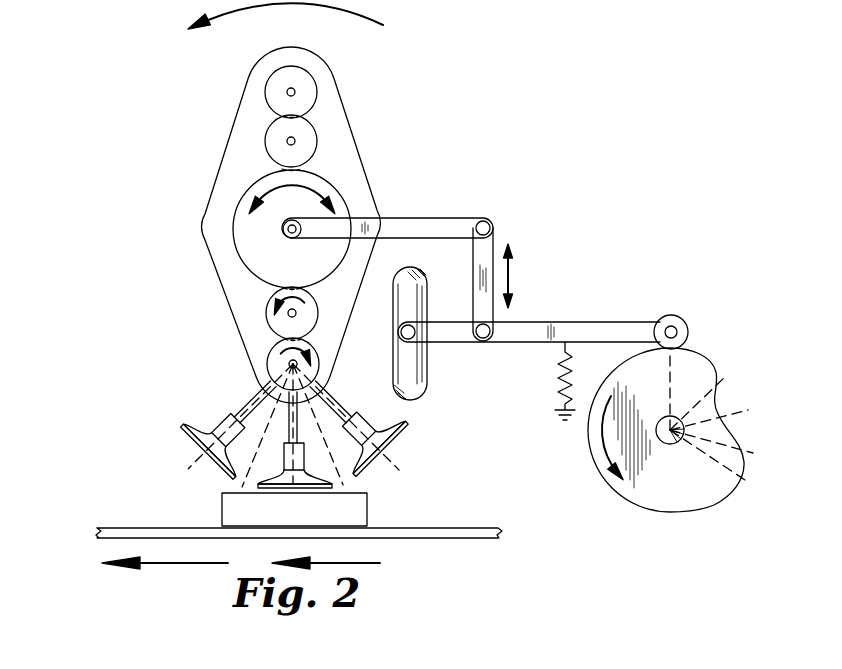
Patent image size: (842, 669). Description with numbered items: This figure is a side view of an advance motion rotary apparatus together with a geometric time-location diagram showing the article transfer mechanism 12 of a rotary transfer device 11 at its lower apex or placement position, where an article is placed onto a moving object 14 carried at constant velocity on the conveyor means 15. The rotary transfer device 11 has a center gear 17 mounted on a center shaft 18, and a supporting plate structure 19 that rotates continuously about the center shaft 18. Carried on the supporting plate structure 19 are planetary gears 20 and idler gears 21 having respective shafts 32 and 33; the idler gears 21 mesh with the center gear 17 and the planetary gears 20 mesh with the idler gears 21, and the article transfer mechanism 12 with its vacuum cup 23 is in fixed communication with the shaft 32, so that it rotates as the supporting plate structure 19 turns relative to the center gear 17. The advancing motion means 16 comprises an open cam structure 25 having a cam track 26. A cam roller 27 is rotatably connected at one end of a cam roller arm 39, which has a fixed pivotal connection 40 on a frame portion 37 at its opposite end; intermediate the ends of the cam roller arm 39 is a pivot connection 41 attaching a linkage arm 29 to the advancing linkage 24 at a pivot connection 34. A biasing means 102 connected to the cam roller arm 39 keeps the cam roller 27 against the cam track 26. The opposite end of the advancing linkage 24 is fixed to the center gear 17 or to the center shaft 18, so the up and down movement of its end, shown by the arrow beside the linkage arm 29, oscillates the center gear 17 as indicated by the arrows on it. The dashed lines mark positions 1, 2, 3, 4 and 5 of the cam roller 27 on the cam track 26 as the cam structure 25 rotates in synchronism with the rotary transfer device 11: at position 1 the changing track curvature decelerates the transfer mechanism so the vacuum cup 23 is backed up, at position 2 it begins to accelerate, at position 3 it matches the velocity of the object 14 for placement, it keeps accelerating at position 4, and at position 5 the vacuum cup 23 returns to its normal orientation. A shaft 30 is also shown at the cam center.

The position 1 is at (488, 416).
The position 2 is at (518, 430).
The position 3 is at (527, 441).
The position 4 is at (498, 441).
The position 5 is at (465, 432).
The rotary transfer device 11 is at (198, 190).
The article transfer mechanism 12 is at (246, 390).
The moving object 14 is at (360, 512).
The conveyor means 15 is at (478, 534).
The advancing motion means 16 is at (597, 294).
The center gear 17 is at (240, 243).
The center shaft 18 is at (297, 236).
The supporting plate structure 19 is at (360, 187).
The planetary gears 20 is at (311, 89).
The idler gears 21 is at (312, 135).
The vacuum cup 23 is at (214, 428).
The advancing linkage 24 is at (435, 225).
The open cam structure 25 is at (694, 500).
The cam track 26 is at (712, 360).
The cam roller 27 is at (676, 318).
The linkage arm 29 is at (478, 256).
The cam shaft 30 is at (678, 443).
The shaft 32 is at (287, 92).
The shaft 33 is at (287, 142).
The pivot connection 34 is at (488, 222).
The frame portion 37 is at (421, 386).
The cam roller arm 39 is at (537, 326).
The fixed pivotal connection 40 is at (406, 335).
The pivot connection 41 is at (492, 338).
The biasing means 102 is at (557, 375).